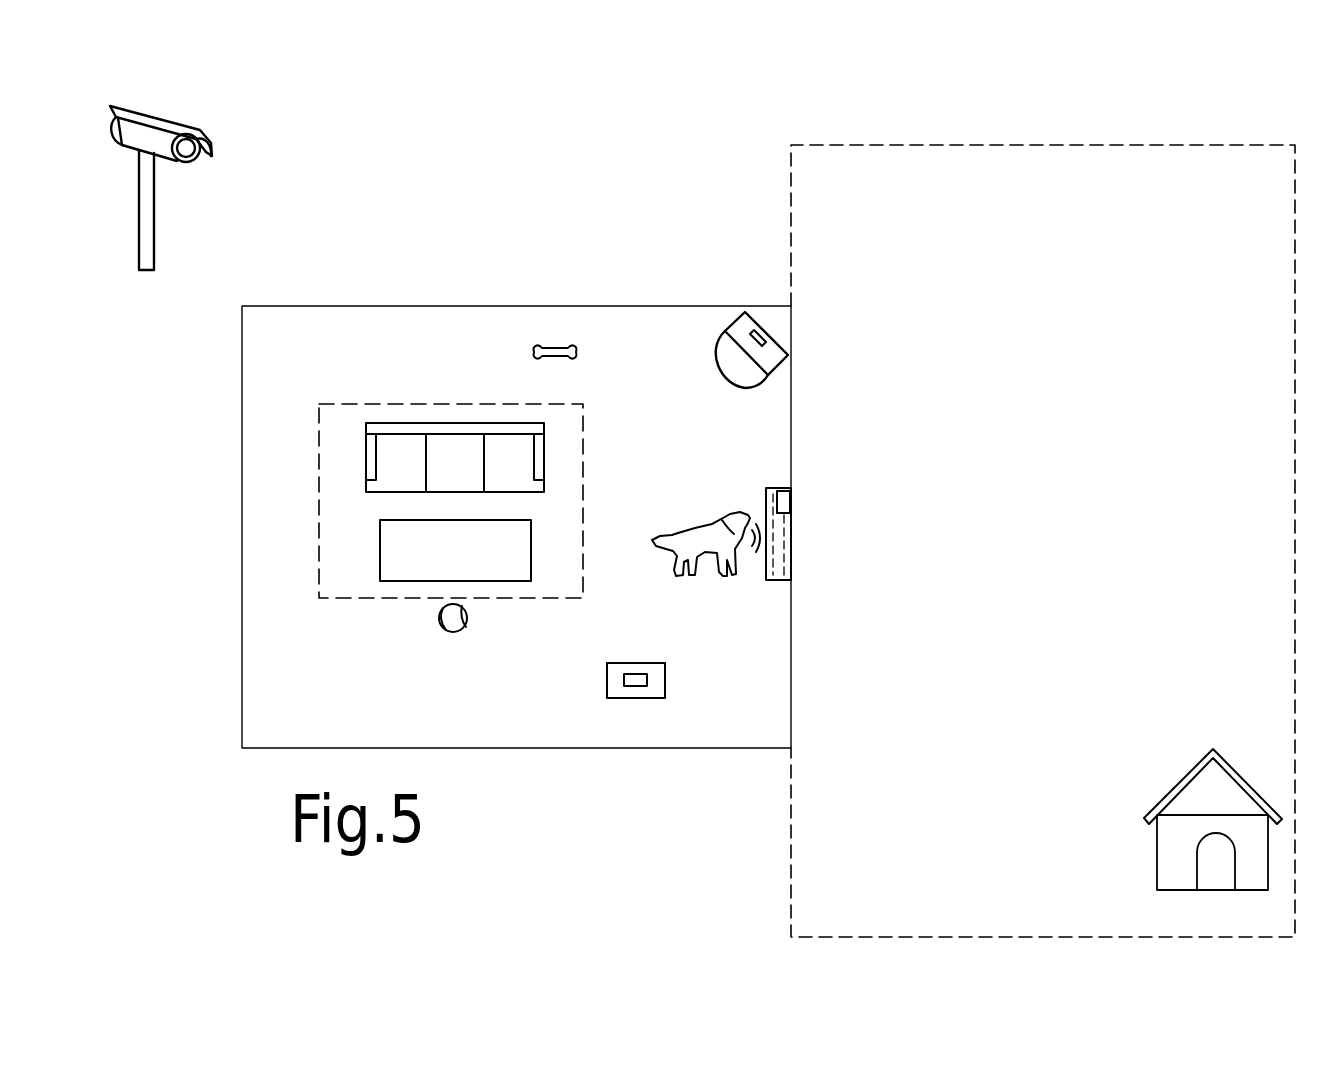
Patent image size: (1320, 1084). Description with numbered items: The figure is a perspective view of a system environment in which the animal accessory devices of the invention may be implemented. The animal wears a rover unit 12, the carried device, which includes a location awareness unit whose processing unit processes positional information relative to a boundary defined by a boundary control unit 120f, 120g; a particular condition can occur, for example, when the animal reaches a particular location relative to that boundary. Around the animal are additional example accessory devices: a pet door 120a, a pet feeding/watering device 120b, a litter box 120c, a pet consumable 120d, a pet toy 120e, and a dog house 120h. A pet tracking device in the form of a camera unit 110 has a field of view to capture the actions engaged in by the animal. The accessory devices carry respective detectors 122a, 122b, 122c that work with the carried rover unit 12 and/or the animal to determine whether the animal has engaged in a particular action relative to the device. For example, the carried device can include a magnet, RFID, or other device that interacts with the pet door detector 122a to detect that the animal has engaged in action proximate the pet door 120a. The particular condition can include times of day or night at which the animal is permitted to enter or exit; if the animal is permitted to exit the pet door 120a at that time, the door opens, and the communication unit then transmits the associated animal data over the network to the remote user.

The camera unit 110 is at (158, 122).
The rover unit 12 is at (724, 524).
The pet door 120a is at (792, 489).
The pet door detector 122a is at (792, 499).
The pet feeding/watering device 120b is at (720, 350).
The detector 122b is at (755, 333).
The litter box 120c is at (655, 677).
The detector 122c is at (633, 681).
The pet consumable 120d is at (560, 345).
The pet toy 120e is at (440, 624).
The boundary control unit 120f is at (340, 404).
The boundary control unit 120g is at (1015, 147).
The dog house 120h is at (1193, 793).